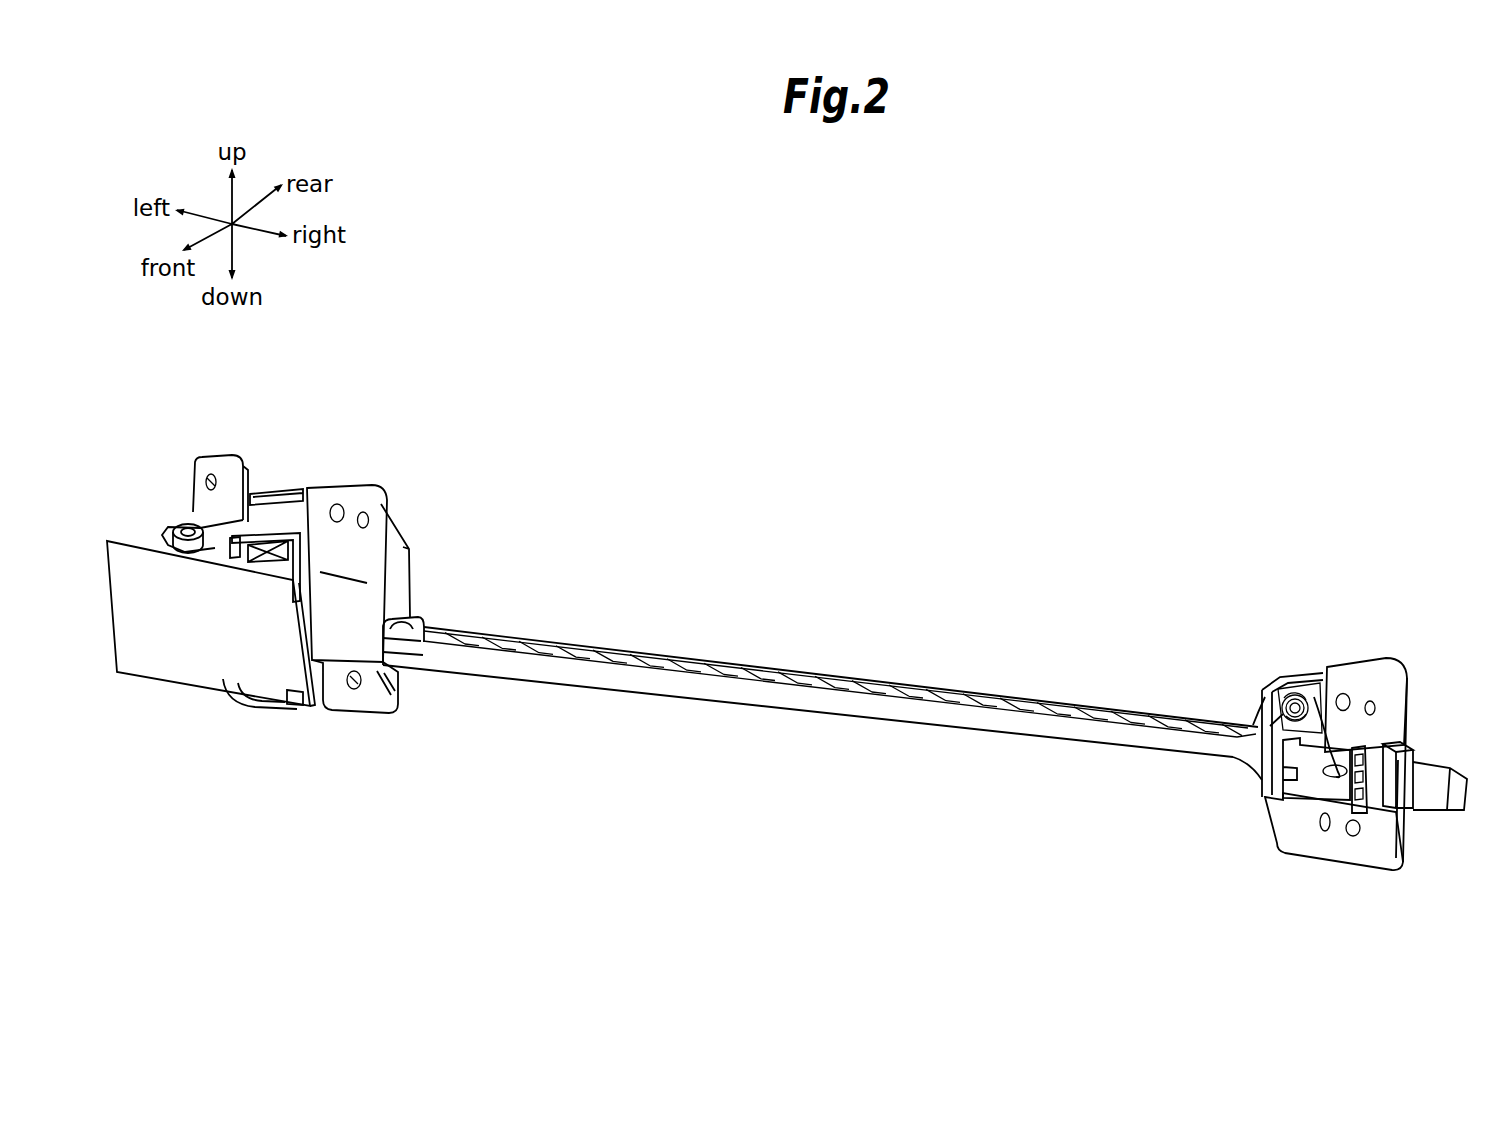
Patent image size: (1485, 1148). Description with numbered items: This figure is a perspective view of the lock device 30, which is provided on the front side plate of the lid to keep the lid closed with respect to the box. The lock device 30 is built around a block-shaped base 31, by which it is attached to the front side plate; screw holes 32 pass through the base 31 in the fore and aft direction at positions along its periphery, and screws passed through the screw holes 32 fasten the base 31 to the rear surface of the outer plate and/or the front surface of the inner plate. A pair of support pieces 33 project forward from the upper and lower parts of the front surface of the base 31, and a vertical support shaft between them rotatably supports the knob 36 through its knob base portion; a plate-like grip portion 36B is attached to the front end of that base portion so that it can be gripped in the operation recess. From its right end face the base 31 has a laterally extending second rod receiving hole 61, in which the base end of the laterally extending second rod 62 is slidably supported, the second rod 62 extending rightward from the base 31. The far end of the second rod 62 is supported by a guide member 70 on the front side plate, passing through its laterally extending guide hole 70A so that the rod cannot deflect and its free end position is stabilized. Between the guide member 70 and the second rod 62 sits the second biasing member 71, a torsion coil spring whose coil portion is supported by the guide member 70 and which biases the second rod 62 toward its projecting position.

The lock device 30 is at (860, 444).
The base 31 is at (381, 486).
The screw holes 32 is at (190, 462).
The support pieces 33 is at (187, 521).
The knob 36 is at (207, 704).
The grip portion 36B is at (157, 647).
The second rod receiving hole 61 is at (414, 621).
The second rod 62 is at (676, 686).
The guide member 70 is at (1325, 847).
The guide hole 70A is at (1408, 781).
The second biasing member 71 is at (1308, 683).